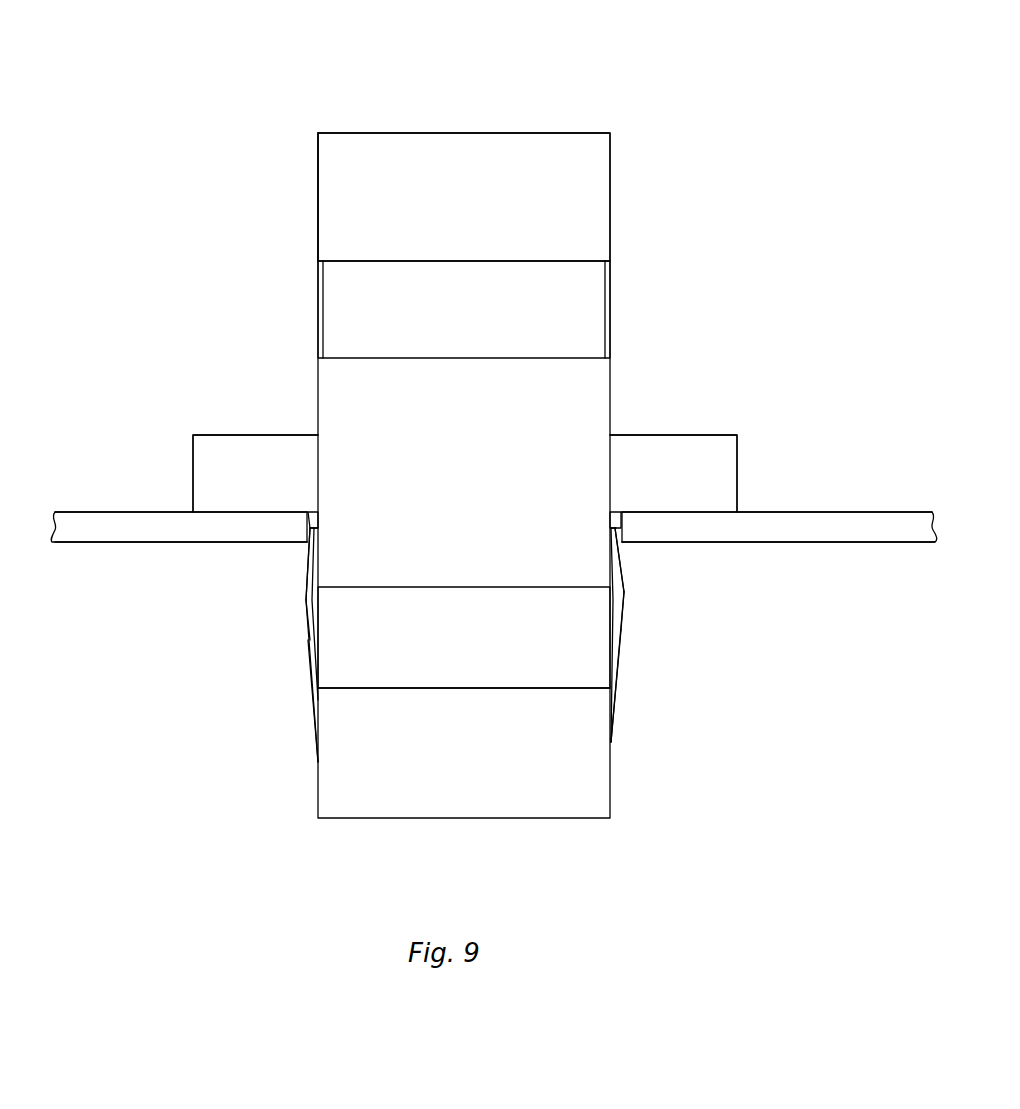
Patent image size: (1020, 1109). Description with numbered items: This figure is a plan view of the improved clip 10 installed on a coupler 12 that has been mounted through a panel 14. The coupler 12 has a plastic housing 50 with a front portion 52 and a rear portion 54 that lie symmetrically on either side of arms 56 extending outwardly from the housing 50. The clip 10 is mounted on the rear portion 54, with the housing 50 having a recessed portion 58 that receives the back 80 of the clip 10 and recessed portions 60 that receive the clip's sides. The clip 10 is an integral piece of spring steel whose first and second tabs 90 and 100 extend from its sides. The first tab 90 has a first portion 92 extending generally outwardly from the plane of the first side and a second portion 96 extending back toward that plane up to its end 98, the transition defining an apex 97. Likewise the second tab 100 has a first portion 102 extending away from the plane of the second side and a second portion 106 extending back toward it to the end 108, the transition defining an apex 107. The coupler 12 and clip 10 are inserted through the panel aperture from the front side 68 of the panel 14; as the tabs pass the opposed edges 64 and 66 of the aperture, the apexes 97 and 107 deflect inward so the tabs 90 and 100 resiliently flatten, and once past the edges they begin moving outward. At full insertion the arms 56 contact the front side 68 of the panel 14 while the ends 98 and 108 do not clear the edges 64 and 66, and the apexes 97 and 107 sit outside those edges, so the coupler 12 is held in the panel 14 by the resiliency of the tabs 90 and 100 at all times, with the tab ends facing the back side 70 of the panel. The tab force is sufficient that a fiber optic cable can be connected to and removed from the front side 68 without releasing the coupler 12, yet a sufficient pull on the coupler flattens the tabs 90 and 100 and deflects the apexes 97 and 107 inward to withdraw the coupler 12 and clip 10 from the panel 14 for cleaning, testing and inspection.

The clip 10 is at (497, 692).
The coupler 12 is at (403, 130).
The panel 14 is at (98, 525).
The housing 50 is at (692, 117).
The front portion 52 is at (318, 193).
The rear portion 54 is at (318, 790).
The arms 56 is at (193, 478).
The recessed portion 58 is at (464, 309).
The recessed portions 60 is at (323, 312).
The opposed edge 64 is at (318, 516).
The opposed edge 66 is at (612, 516).
The front side 68 is at (72, 511).
The back side 70 is at (160, 544).
The back 80 is at (464, 637).
The first tab 90 is at (626, 644).
The first portion 92 is at (612, 700).
The second portion 96 is at (622, 570).
The apex 97 is at (625, 597).
The end 98 is at (611, 527).
The second tab 100 is at (304, 652).
The first portion 102 is at (312, 705).
The second portion 106 is at (307, 565).
The apex 107 is at (305, 600).
The end 108 is at (318, 527).